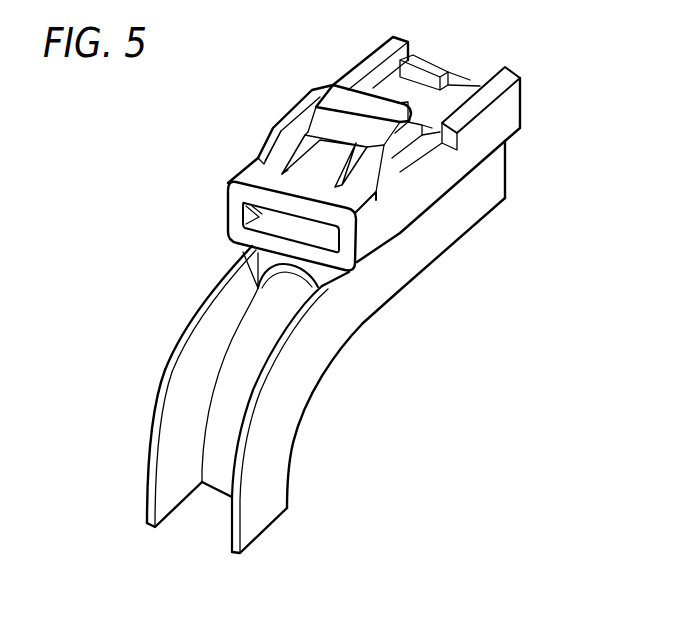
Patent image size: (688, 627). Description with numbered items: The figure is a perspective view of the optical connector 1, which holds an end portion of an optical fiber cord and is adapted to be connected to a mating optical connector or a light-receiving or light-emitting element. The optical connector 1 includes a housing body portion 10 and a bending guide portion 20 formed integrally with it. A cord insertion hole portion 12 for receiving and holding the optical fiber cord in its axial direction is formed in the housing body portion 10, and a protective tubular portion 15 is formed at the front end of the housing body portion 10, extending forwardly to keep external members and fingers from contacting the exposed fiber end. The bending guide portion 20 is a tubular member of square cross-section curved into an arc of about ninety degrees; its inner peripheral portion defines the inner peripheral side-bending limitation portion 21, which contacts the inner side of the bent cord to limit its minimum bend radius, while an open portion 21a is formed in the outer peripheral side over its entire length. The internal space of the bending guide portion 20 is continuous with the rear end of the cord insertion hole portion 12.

The optical connector 1 is at (198, 166).
The housing body portion 10 is at (481, 223).
The cord insertion hole portion 12 is at (317, 283).
The protective tubular portion 15 is at (498, 173).
The bending guide portion 20 is at (291, 459).
The inner peripheral side-bending limitation portion 21 is at (218, 478).
The open portion 21a is at (164, 428).